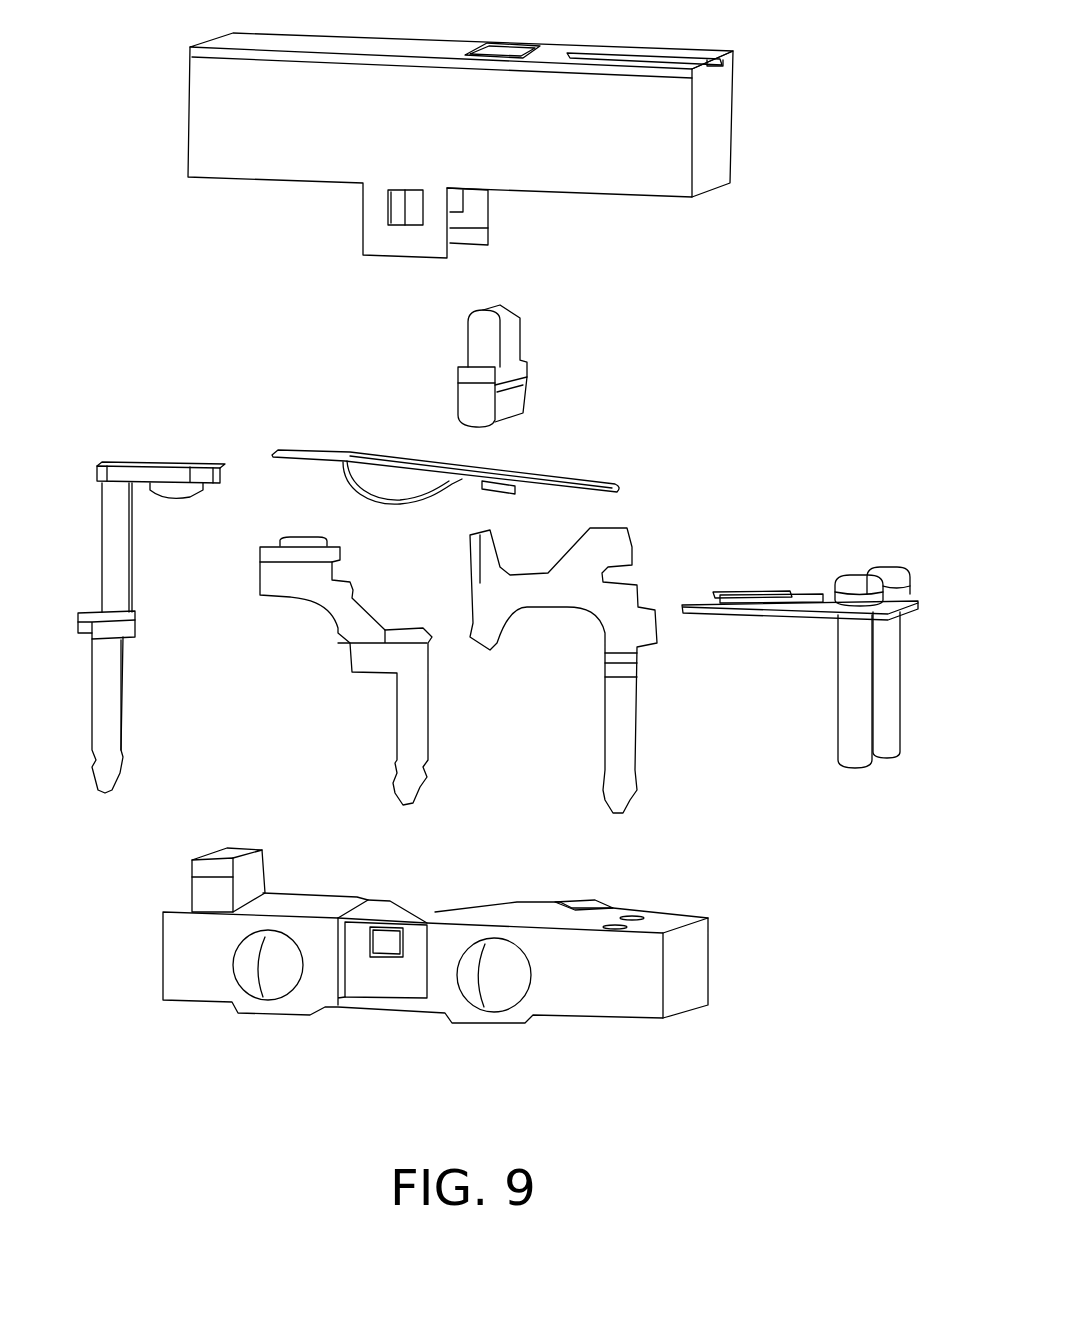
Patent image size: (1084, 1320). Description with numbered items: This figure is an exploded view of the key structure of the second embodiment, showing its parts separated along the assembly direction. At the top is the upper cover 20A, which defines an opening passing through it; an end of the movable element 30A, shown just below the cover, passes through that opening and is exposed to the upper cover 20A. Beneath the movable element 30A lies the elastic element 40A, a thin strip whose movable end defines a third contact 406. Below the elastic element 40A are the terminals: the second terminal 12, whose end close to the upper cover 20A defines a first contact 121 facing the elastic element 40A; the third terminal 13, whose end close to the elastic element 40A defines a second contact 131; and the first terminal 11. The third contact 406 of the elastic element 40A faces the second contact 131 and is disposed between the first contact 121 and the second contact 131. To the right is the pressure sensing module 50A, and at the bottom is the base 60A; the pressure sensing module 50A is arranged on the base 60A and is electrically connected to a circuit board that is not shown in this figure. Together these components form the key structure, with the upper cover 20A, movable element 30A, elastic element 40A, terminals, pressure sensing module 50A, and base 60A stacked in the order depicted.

The upper cover 20A is at (722, 135).
The movable element 30A is at (515, 338).
The elastic element 40A is at (460, 476).
The third contact 406 is at (308, 465).
The second terminal 12 is at (165, 627).
The first contact 121 is at (170, 490).
The third terminal 13 is at (346, 657).
The second contact 131 is at (312, 535).
The first terminal 11 is at (623, 735).
The pressure sensing module 50A is at (788, 593).
The base 60A is at (678, 922).